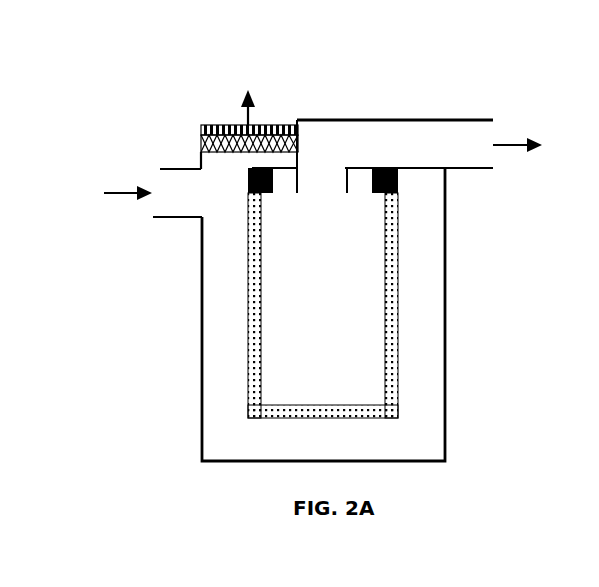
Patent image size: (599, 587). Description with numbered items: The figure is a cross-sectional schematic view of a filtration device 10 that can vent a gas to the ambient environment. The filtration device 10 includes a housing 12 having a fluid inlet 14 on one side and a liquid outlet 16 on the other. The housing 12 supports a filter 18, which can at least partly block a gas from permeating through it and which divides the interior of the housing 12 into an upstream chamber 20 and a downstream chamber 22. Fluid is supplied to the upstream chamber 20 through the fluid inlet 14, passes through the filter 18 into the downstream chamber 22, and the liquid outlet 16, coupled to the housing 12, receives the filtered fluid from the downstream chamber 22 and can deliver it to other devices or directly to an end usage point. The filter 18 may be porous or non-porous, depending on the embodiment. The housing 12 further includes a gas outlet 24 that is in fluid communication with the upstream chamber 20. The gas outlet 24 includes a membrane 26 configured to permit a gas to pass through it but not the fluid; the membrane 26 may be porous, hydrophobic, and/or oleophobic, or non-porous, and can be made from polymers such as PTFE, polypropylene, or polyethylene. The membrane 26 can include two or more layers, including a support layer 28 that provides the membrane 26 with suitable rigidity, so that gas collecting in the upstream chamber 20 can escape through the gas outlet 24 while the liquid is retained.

The filtration device 10 is at (88, 80).
The housing 12 is at (201, 320).
The fluid inlet 14 is at (175, 187).
The liquid outlet 16 is at (413, 133).
The filter 18 is at (395, 303).
The upstream chamber 20 is at (227, 413).
The downstream chamber 22 is at (322, 289).
The gas outlet 24 is at (213, 163).
The membrane 26 is at (272, 125).
The support layer 28 is at (222, 125).